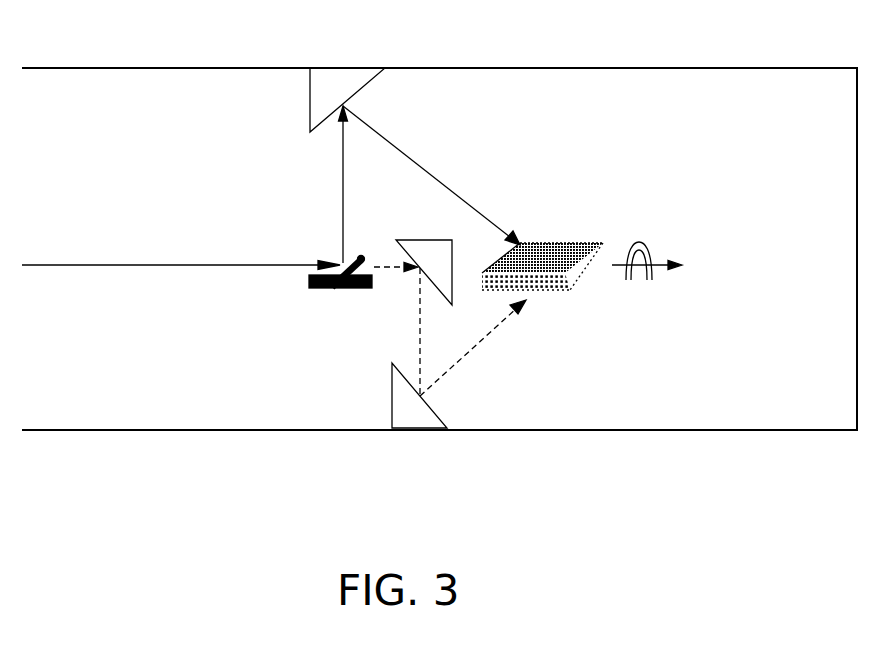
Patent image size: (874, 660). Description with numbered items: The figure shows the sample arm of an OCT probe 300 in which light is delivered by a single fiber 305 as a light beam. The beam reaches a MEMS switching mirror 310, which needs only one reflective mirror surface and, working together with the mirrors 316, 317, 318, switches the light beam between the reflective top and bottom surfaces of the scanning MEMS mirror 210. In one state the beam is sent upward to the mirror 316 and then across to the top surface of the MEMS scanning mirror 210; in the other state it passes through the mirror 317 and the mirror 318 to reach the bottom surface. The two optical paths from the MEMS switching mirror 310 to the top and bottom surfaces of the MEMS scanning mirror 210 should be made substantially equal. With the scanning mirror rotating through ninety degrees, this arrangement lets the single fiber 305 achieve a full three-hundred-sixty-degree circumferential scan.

The OCT probe 300 is at (190, 490).
The single fiber 305 is at (112, 262).
The MEMS switching mirror 310 is at (343, 289).
The mirror 316 is at (310, 98).
The mirror 317 is at (438, 240).
The mirror 318 is at (432, 407).
The MEMS scanning mirror 210 is at (606, 230).